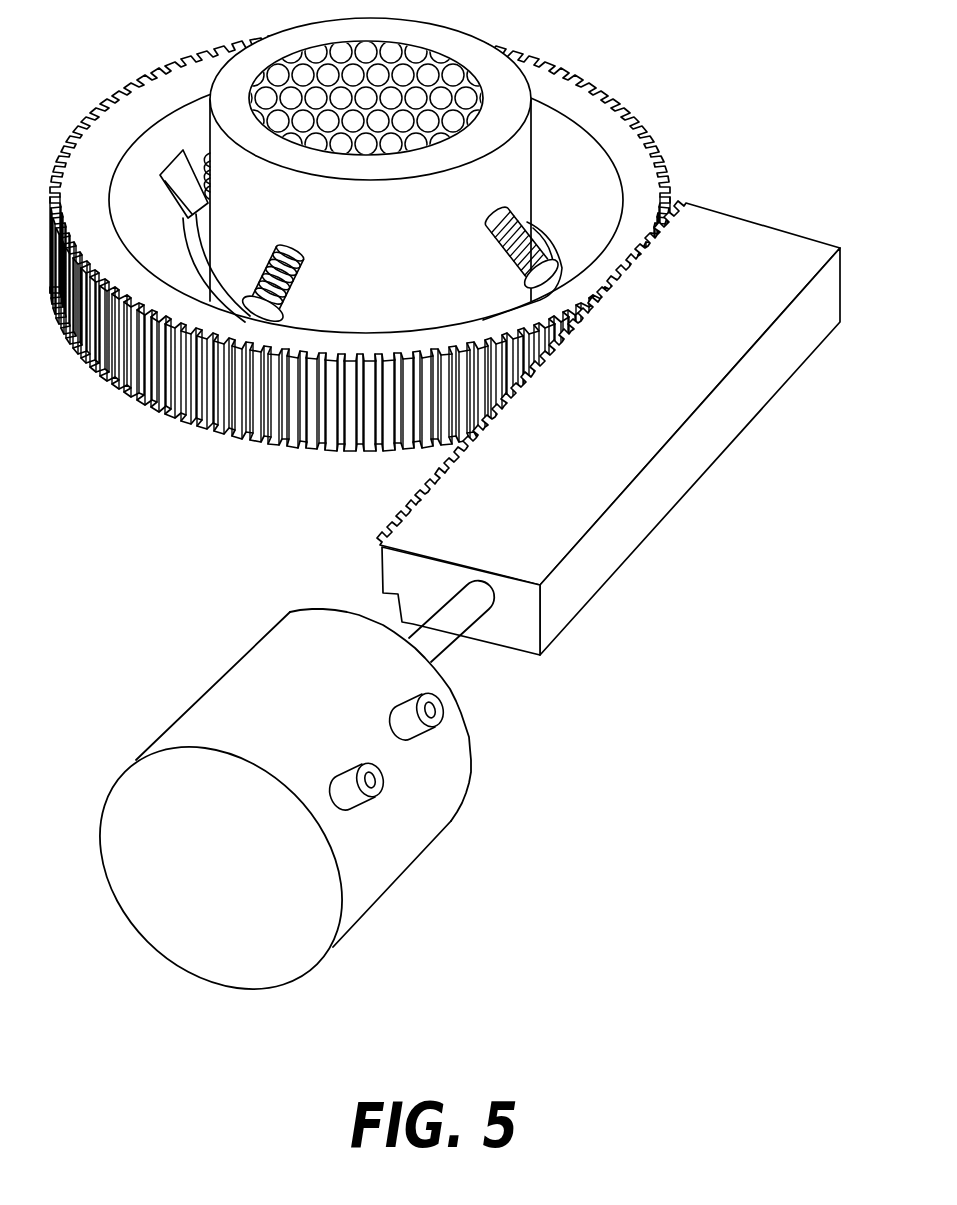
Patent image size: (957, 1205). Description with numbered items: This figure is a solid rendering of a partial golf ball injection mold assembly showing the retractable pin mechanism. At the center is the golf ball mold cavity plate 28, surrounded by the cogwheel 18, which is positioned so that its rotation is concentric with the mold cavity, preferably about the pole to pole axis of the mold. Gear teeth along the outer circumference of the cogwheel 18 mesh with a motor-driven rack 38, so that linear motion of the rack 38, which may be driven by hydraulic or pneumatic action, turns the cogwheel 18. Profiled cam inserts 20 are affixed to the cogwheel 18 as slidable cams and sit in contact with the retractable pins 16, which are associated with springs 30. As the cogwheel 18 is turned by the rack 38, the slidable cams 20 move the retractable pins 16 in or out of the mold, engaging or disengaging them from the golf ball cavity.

The retractable pins 16 is at (187, 153).
The cogwheel 18 is at (628, 133).
The profiled cam inserts 20 is at (178, 206).
The golf ball mold cavity plate 28 is at (490, 65).
The springs 30 is at (300, 279).
The rack 38 is at (690, 462).